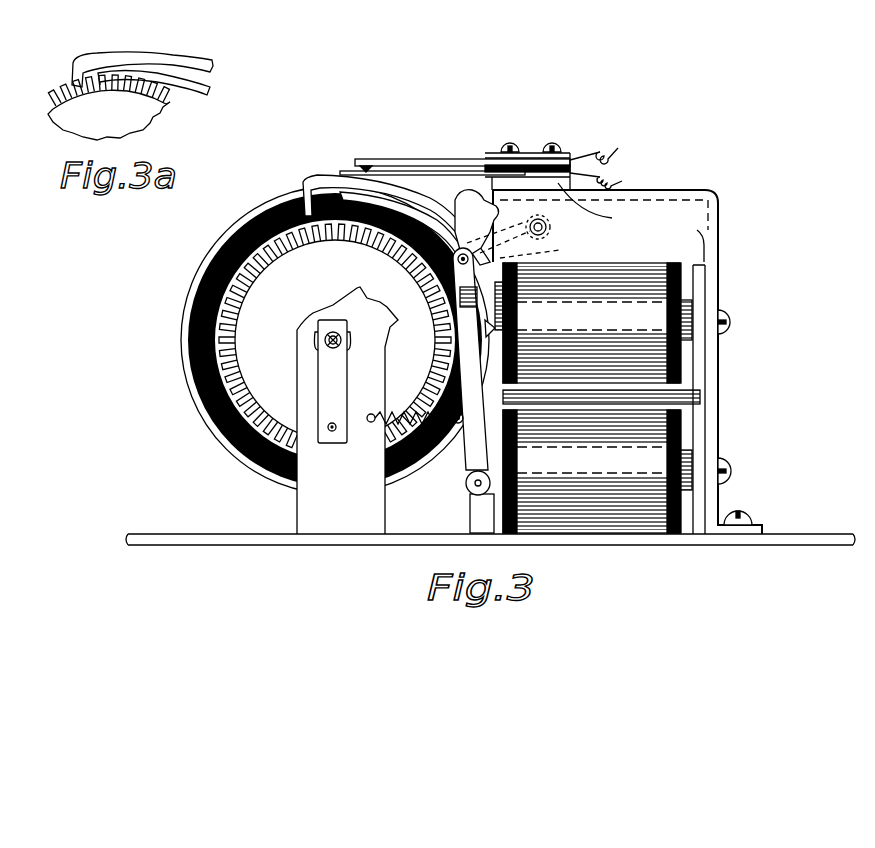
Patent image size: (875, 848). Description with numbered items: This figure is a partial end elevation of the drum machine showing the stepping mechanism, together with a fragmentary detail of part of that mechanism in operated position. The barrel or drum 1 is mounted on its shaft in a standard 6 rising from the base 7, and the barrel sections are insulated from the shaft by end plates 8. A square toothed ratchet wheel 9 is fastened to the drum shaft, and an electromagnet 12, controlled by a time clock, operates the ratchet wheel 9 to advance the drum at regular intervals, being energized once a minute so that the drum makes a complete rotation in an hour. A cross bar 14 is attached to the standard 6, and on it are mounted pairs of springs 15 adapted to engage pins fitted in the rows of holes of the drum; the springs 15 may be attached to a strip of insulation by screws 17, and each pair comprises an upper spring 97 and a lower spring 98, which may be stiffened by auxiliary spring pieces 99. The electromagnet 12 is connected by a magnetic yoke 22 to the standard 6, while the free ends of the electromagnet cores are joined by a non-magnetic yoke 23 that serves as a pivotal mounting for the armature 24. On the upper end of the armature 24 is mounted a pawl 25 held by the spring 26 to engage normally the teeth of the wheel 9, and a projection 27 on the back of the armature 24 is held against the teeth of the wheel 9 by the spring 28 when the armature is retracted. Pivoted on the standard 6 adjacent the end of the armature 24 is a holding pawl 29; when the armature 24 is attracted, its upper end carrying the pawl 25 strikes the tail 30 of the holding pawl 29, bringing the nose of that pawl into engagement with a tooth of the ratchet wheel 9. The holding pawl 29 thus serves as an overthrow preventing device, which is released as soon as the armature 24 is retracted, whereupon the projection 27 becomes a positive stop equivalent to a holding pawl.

In FIG. 3, the barrel or drum 1 is at (196, 415).
In FIG. 3, the standard 6 is at (303, 503).
In FIG. 3, the base 7 is at (605, 537).
In FIG. 3, the end plate 8 is at (204, 259).
In FIG. 3A, the ratchet wheel 9 is at (143, 115).
In FIG. 3, the ratchet wheel 9 is at (248, 338).
In FIG. 3, the electromagnet 12 is at (650, 440).
In FIG. 3, the cross bar 14 is at (600, 208).
In FIG. 3, the springs 15 is at (600, 158).
In FIG. 3, the screws 17 is at (553, 146).
In FIG. 3, the magnetic yoke 22 is at (700, 279).
In FIG. 3, the non-magnetic yoke 23 is at (490, 500).
In FIG. 3, the armature 24 is at (468, 440).
In FIG. 3A, the pawl 25 is at (200, 83).
In FIG. 3, the pawl 25 is at (431, 238).
In FIG. 3, the spring 26 is at (426, 312).
In FIG. 3, the projection 27 is at (436, 376).
In FIG. 3, the spring 28 is at (372, 425).
In FIG. 3A, the holding pawl 29 is at (82, 63).
In FIG. 3, the holding pawl 29 is at (311, 178).
In FIG. 3, the tail 30 is at (520, 254).
In FIG. 3, the upper spring 97 is at (379, 160).
In FIG. 3, the lower spring 98 is at (335, 176).
In FIG. 3, the auxiliary spring pieces 99 is at (415, 172).